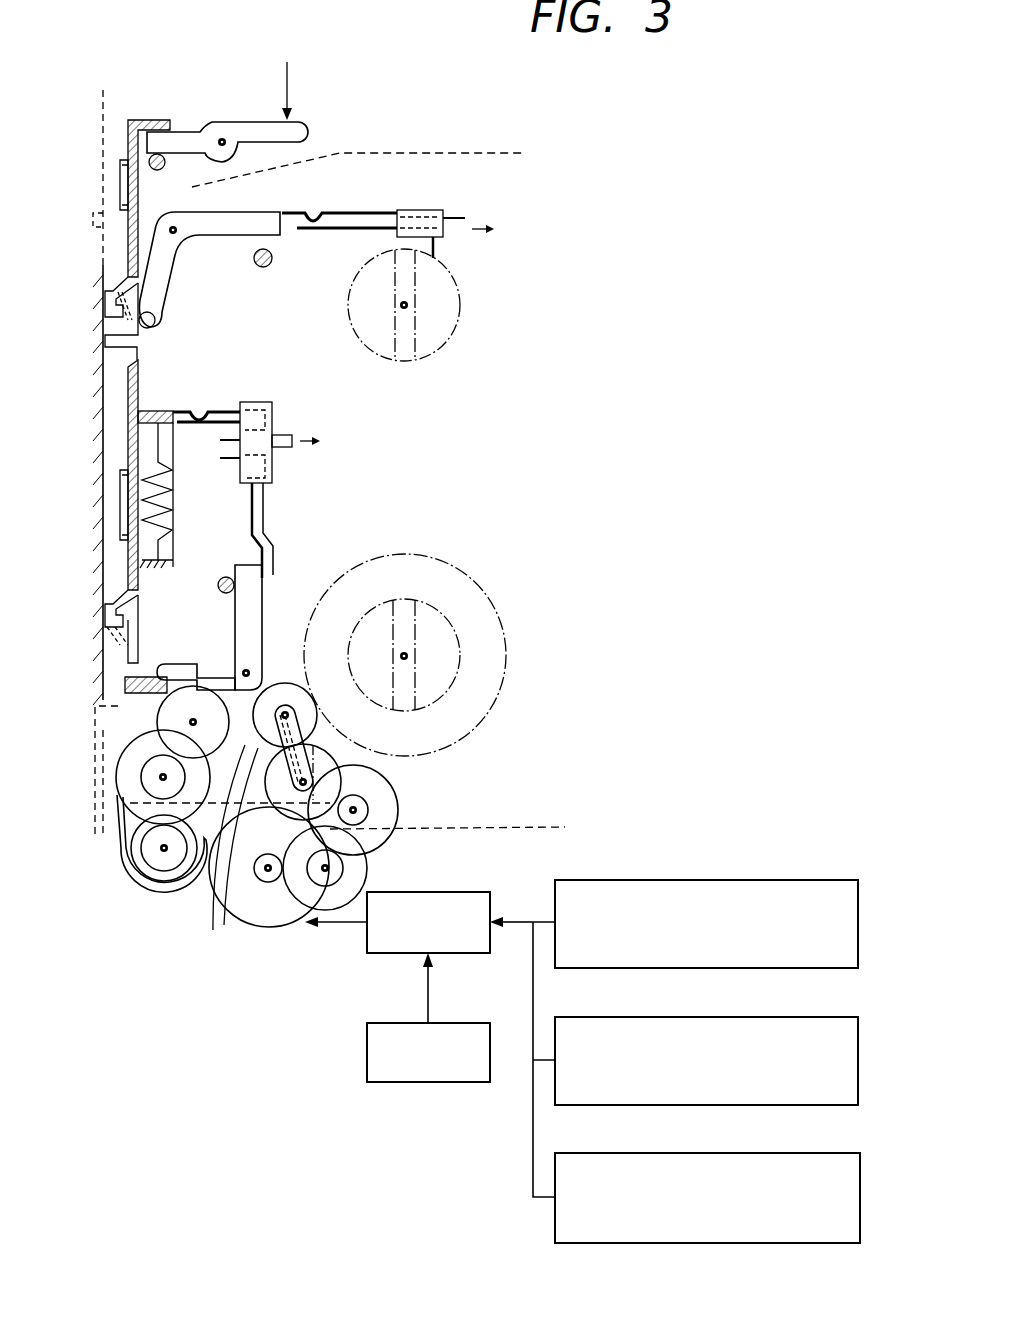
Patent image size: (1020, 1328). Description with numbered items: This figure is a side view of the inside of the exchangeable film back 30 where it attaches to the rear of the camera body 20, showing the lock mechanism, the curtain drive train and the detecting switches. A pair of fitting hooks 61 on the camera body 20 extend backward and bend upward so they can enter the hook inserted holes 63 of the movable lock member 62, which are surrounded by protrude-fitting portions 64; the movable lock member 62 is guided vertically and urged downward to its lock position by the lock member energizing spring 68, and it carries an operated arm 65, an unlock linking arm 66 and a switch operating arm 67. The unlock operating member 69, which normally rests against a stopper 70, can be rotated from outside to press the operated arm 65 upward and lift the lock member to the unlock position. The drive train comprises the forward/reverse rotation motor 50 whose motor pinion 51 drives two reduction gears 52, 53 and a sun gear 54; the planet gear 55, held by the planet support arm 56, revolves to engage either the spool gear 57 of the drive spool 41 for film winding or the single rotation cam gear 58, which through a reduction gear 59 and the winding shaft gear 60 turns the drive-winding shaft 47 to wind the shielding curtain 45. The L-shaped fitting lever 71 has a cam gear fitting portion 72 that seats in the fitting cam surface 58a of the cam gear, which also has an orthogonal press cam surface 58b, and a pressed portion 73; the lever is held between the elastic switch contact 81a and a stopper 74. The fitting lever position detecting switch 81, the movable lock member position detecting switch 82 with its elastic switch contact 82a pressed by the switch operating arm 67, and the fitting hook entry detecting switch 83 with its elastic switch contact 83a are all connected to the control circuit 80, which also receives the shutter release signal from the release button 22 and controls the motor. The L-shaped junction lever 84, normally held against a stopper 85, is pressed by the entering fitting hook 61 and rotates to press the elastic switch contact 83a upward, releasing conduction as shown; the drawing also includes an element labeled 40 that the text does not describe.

The camera body 20 is at (68, 142).
The release button 22 is at (479, 1023).
The film back 30 is at (406, 94).
The shaft / roller 40 is at (442, 327).
The drive spool 41 is at (470, 600).
The shielding curtain 45 is at (133, 883).
The drive-winding shaft 47 is at (169, 888).
The forward/reverse rotation motor 50 is at (283, 920).
The motor pinion 51 is at (262, 884).
The reduction gear 52 is at (353, 875).
The reduction gear 53 is at (370, 840).
The sun gear 54 is at (318, 740).
The planet gear 55 is at (226, 912).
The planet support arm 56 is at (345, 790).
The spool gear 57 is at (507, 680).
The single rotation cam gear 58 is at (128, 782).
The fitting cam surface 58a is at (118, 728).
The press cam surface 58b is at (262, 688).
The reduction gear 59 is at (117, 795).
The winding shaft gear 60 is at (160, 872).
The fitting hook 61 is at (125, 300).
The movable lock member 62 is at (128, 537).
The hook inserted hole 63 is at (103, 335).
The protrude-fitting portion 64 is at (104, 305).
The operated arm 65 is at (143, 120).
The unlock linking arm 66 is at (160, 722).
The switch operating arm 67 is at (188, 408).
The lock member energizing spring 68 is at (150, 467).
The unlock operating member 69 is at (305, 130).
The stopper 70 is at (165, 156).
The fitting lever 71 is at (253, 614).
The cam gear fitting portion 72 is at (195, 663).
The pressed portion 73 is at (130, 692).
The stopper 74 is at (225, 577).
The control circuit 80 is at (475, 892).
The fitting lever position detecting switch 81 is at (272, 503).
The elastic switch contact 81a is at (265, 530).
The movable lock member position detecting switch 82 is at (255, 400).
The elastic switch contact 82a is at (222, 396).
The fitting hook entry detecting switch 83 is at (320, 204).
The elastic switch contact 83a is at (380, 210).
The junction lever 84 is at (252, 228).
The stopper 85 is at (270, 265).